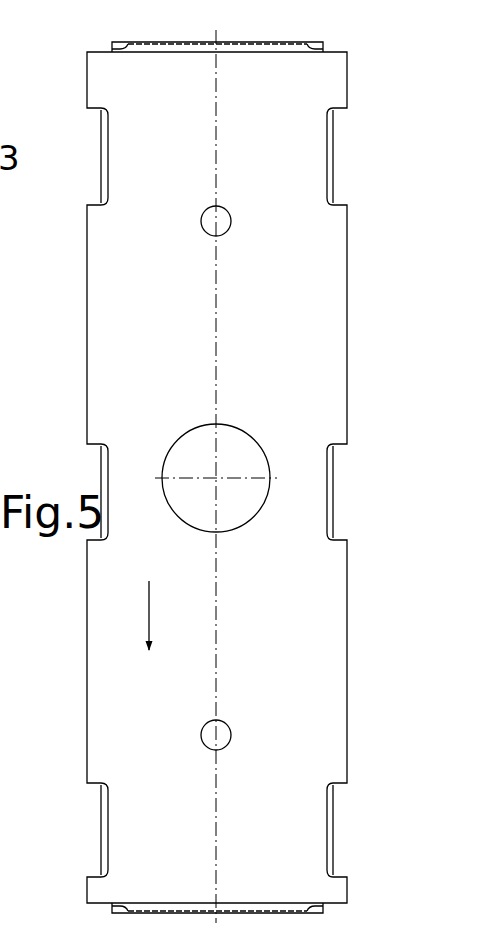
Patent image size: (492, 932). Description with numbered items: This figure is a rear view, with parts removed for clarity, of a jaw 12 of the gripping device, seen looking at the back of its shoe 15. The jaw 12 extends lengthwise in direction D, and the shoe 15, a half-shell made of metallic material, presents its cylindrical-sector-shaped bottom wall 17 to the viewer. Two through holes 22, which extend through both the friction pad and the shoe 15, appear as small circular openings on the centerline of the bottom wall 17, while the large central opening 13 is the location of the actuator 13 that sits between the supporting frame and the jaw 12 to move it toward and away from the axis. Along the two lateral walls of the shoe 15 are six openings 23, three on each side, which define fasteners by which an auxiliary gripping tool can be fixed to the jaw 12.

The jaw 12 is at (152, 36).
The actuator 13 is at (238, 494).
The shoe 15 is at (300, 92).
The bottom wall 17 is at (250, 378).
The through hole 22 is at (222, 226).
The opening 23 is at (92, 168).
The direction D is at (149, 618).